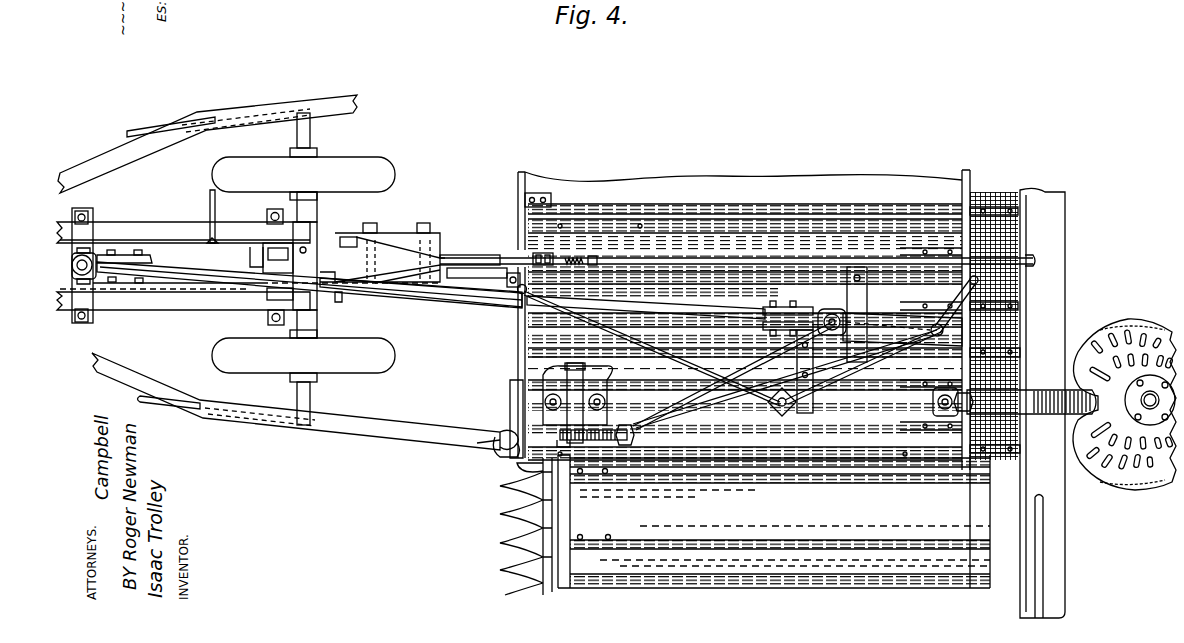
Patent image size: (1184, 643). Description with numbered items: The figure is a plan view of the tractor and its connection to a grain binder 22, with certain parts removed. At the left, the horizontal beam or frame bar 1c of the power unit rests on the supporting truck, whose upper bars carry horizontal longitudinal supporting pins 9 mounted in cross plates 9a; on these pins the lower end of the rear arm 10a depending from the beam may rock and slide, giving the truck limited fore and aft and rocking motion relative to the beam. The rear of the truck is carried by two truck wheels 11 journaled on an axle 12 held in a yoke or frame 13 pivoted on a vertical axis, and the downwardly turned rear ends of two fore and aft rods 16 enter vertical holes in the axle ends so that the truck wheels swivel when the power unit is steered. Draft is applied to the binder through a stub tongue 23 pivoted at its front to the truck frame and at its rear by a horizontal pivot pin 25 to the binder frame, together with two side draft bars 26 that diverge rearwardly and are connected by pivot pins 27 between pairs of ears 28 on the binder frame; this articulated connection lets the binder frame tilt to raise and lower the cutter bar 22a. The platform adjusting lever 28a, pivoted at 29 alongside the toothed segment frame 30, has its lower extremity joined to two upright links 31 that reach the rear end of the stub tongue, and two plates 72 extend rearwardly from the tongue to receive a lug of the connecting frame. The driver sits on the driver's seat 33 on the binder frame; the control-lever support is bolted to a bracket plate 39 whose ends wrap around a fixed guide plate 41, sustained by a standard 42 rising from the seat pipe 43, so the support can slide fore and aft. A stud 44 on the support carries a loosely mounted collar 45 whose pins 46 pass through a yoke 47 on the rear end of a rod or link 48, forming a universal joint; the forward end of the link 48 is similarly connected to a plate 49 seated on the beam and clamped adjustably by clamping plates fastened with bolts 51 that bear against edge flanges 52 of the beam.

The horizontal beam or frame bar 1c is at (153, 226).
The supporting pins 9 is at (245, 264).
The cross plates 9a is at (249, 292).
The arm 10a is at (276, 258).
The truck wheels 11 is at (385, 164).
The axle 12 is at (311, 140).
The yoke or frame 13 is at (308, 212).
The fore and aft rods 16 is at (150, 132).
The grain binder 22 is at (774, 521).
The cutter bar 22a is at (505, 516).
The stub tongue 23 is at (180, 256).
The pivot pin 25 is at (507, 284).
The side draft bars 26 is at (252, 109).
The pivot pins 27 is at (483, 447).
The ears 28 is at (514, 464).
The platform adjusting lever 28a is at (662, 265).
The pivot axis 29 is at (520, 294).
The segment frame 30 is at (549, 252).
The upright links 31 is at (406, 252).
The driver's seat 33 is at (1103, 322).
The bracket plate 39 is at (853, 326).
The guide plate 41 is at (938, 306).
The standard 42 is at (805, 364).
The seat pipe 43 is at (858, 398).
The stud 44 is at (836, 314).
The collar 45 is at (860, 290).
The pins 46 is at (858, 358).
The yoke 47 is at (826, 306).
The rod or link 48 is at (473, 300).
The plate 49 is at (96, 314).
The bolts 51 is at (90, 210).
The edge flanges 52 is at (145, 306).
The plates 72 is at (468, 256).